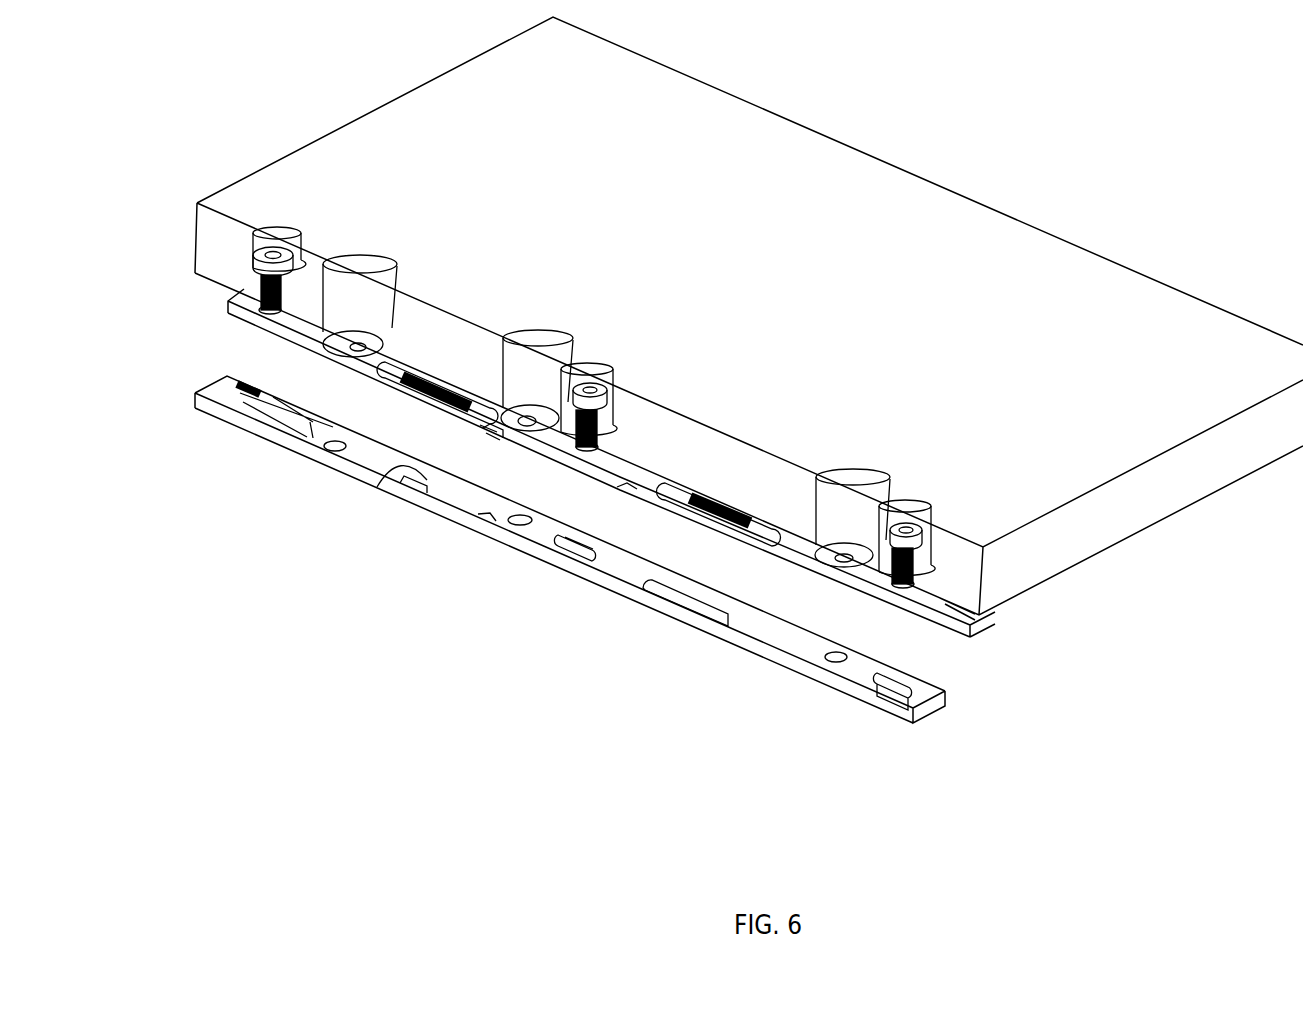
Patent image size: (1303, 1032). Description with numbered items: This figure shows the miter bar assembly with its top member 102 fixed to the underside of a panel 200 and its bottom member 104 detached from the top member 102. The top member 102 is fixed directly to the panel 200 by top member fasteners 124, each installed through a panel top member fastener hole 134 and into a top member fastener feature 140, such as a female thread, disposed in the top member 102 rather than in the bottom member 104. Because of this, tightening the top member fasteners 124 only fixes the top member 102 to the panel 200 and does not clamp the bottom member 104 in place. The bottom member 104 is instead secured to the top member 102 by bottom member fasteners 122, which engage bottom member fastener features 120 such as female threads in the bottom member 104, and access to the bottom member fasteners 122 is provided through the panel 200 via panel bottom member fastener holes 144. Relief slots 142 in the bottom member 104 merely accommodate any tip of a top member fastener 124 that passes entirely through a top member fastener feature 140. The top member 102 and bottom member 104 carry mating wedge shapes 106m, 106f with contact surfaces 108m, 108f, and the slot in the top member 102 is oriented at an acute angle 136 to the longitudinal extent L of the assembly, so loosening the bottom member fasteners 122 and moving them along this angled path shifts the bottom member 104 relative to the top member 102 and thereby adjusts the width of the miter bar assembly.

The panel 200 is at (583, 125).
The top member 102 is at (273, 335).
The bottom member 104 is at (230, 423).
The panel bottom member fastener hole 144 is at (388, 263).
The bottom member fastener 122 is at (527, 420).
The panel top member fastener hole 134 is at (280, 230).
The top member fastener 124 is at (282, 290).
The top member fastener feature 140 is at (257, 301).
The bottom member fastener feature 120 is at (333, 447).
The relief slot 142 is at (588, 557).
The acute angle 136 is at (313, 437).
The longitudinal extent L is at (243, 393).
The contact surface 108m is at (383, 470).
The wedge shape 106m is at (423, 488).
The wedge shape 106f is at (493, 432).
The contact surface 108f is at (468, 548).